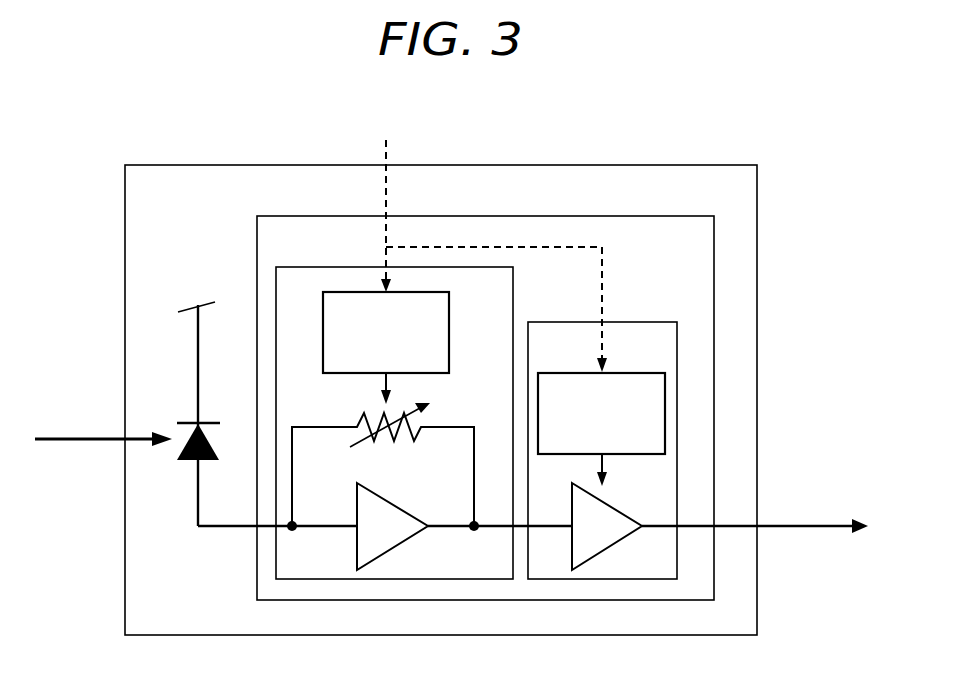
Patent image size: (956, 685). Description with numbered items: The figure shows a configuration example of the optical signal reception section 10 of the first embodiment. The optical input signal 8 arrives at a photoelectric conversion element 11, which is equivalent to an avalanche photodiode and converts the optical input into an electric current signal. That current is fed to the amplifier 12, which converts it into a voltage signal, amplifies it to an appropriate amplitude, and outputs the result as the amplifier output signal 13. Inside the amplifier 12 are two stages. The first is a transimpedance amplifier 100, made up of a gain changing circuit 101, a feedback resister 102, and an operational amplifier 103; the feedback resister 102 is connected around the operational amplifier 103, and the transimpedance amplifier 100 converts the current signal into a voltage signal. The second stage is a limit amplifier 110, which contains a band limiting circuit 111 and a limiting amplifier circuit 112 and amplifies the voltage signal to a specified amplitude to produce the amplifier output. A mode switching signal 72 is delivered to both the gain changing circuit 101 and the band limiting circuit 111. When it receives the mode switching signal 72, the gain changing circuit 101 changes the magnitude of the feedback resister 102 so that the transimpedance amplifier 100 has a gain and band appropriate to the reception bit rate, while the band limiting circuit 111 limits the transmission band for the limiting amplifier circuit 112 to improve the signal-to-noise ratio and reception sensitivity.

The optical input signal 8 is at (72, 437).
The optical signal reception section 10 is at (706, 165).
The photoelectric conversion element 11 is at (208, 422).
The amplifier 12 is at (637, 215).
The amplifier output signal 13 is at (797, 527).
The mode switching signal 72 is at (432, 228).
The transimpedance amplifier 100 is at (320, 265).
The gain changing circuit 101 is at (450, 323).
The feedback resister 102 is at (322, 423).
The operational amplifier 103 is at (400, 508).
The limit amplifier 110 is at (640, 320).
The band limiting circuit 111 is at (630, 372).
The limiting amplifier circuit 112 is at (622, 508).